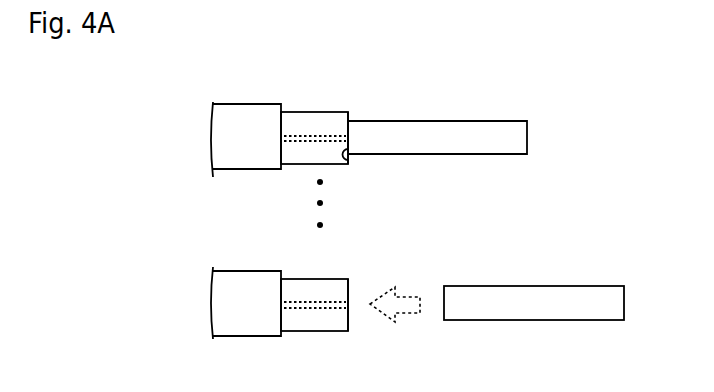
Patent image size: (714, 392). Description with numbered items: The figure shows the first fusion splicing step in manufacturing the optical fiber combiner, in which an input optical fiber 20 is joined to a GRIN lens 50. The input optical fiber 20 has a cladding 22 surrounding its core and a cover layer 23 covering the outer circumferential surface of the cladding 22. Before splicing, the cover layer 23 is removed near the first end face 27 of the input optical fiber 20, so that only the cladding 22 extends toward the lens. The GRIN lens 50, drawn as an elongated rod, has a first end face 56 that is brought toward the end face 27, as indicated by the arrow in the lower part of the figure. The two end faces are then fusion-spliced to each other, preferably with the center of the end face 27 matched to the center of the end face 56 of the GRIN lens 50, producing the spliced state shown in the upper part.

The input optical fiber 20 is at (200, 138).
The cladding 22 is at (315, 111).
The cover layer 23 is at (254, 103).
The first end face 27 is at (349, 113).
The GRIN lens 50 is at (527, 137).
The first end face 56 is at (346, 161).